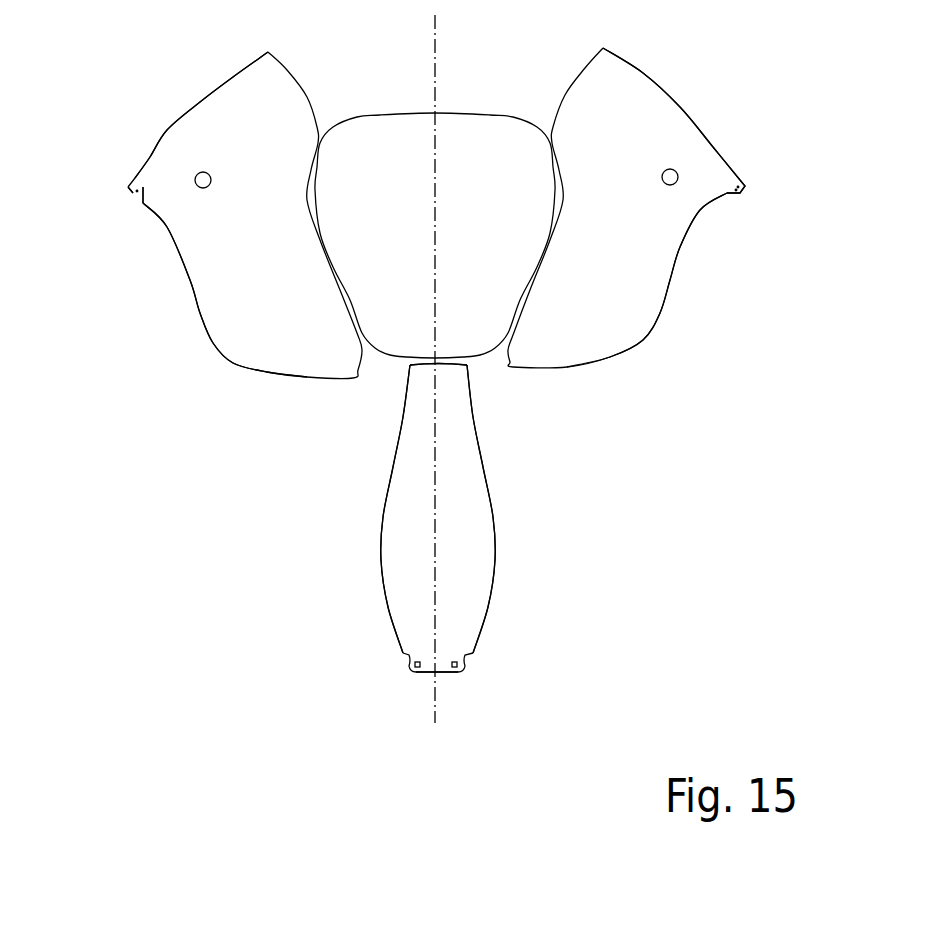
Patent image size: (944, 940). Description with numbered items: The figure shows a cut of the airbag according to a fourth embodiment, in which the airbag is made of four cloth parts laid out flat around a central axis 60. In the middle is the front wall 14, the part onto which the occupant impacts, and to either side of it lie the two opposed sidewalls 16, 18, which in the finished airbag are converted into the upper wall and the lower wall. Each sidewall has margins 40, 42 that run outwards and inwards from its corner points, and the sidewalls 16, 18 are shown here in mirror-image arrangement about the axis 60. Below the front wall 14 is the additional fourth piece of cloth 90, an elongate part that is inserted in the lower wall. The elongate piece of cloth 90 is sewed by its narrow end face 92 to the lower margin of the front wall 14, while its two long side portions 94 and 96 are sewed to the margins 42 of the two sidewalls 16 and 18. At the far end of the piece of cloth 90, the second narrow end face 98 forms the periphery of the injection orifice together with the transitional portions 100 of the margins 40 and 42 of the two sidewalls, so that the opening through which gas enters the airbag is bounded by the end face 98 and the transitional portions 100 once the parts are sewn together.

The front wall 14 is at (393, 221).
The sidewall 16 is at (255, 257).
The sidewall 18 is at (621, 257).
The margin 40 is at (193, 107).
The margin 42 is at (190, 293).
The center line 60 is at (437, 30).
The fourth piece of cloth 90 is at (481, 558).
The narrow end face 92 is at (453, 368).
The long side portion 94 is at (380, 542).
The long side portion 96 is at (495, 502).
The second narrow end face 98 is at (435, 673).
The transitional portion 100 is at (128, 192).